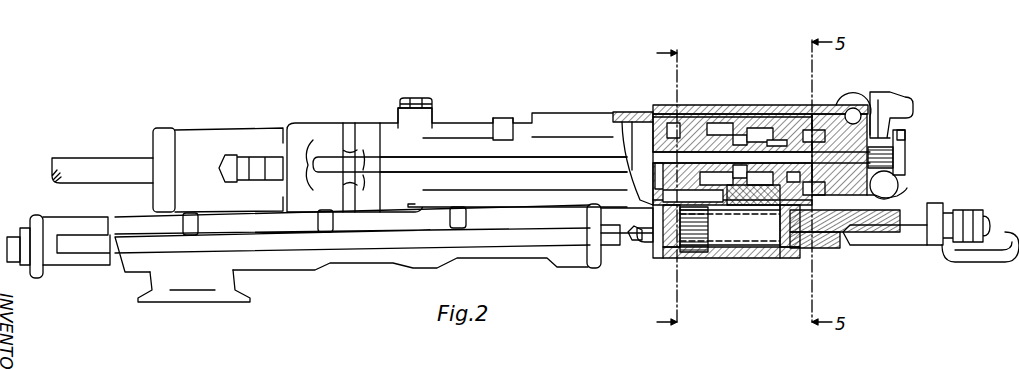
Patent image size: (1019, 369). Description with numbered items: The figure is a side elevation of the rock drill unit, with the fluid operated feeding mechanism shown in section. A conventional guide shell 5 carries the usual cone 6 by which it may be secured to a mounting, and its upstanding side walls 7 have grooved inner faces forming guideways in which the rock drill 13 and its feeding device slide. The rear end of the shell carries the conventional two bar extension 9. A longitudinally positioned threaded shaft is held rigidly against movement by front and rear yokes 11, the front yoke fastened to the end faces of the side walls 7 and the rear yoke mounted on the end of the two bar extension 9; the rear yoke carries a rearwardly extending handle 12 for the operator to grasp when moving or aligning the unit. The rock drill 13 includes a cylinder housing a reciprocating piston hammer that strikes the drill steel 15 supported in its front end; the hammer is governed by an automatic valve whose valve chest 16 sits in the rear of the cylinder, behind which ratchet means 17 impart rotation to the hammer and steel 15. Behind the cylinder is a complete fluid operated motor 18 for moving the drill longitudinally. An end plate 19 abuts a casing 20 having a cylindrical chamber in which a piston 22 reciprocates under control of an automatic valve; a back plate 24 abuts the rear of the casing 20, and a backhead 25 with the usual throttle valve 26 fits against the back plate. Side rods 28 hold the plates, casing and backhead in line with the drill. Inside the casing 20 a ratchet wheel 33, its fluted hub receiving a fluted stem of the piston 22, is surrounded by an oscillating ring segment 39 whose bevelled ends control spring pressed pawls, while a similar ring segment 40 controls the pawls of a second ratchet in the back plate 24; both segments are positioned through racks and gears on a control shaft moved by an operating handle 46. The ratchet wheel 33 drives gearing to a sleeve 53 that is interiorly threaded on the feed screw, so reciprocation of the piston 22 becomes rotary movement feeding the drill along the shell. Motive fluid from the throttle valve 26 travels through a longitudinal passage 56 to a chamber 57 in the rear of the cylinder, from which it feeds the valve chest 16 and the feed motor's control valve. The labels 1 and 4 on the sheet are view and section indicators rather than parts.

The assembly 1 is at (329, 249).
The section line 4- 4 is at (660, 189).
The guide shell 5 is at (321, 268).
The cone 6 is at (164, 289).
The side walls 7 is at (86, 230).
The two bar extension 9 is at (597, 253).
The yokes 11 is at (40, 219).
The handle 12 is at (980, 258).
The rock drill 13 is at (445, 121).
The drill steel 15 is at (118, 142).
The valve chest 16 is at (612, 116).
The ratchet means 17 is at (640, 130).
The fluid operated motor 18 is at (705, 104).
The end plate 19 is at (618, 114).
The casing 20 is at (733, 258).
The piston 22 is at (745, 136).
The back plate 24 is at (787, 258).
The backhead 25 is at (900, 178).
The throttle valve 26 is at (880, 98).
The side rods 28 is at (331, 163).
The ratchet wheel 33 is at (703, 150).
The ring segment 39 is at (705, 140).
The ring segment 40 is at (822, 117).
The operating handle 46 is at (913, 103).
The sleeve 53 is at (763, 238).
The passage 56 is at (858, 105).
The chamber 57 is at (657, 185).